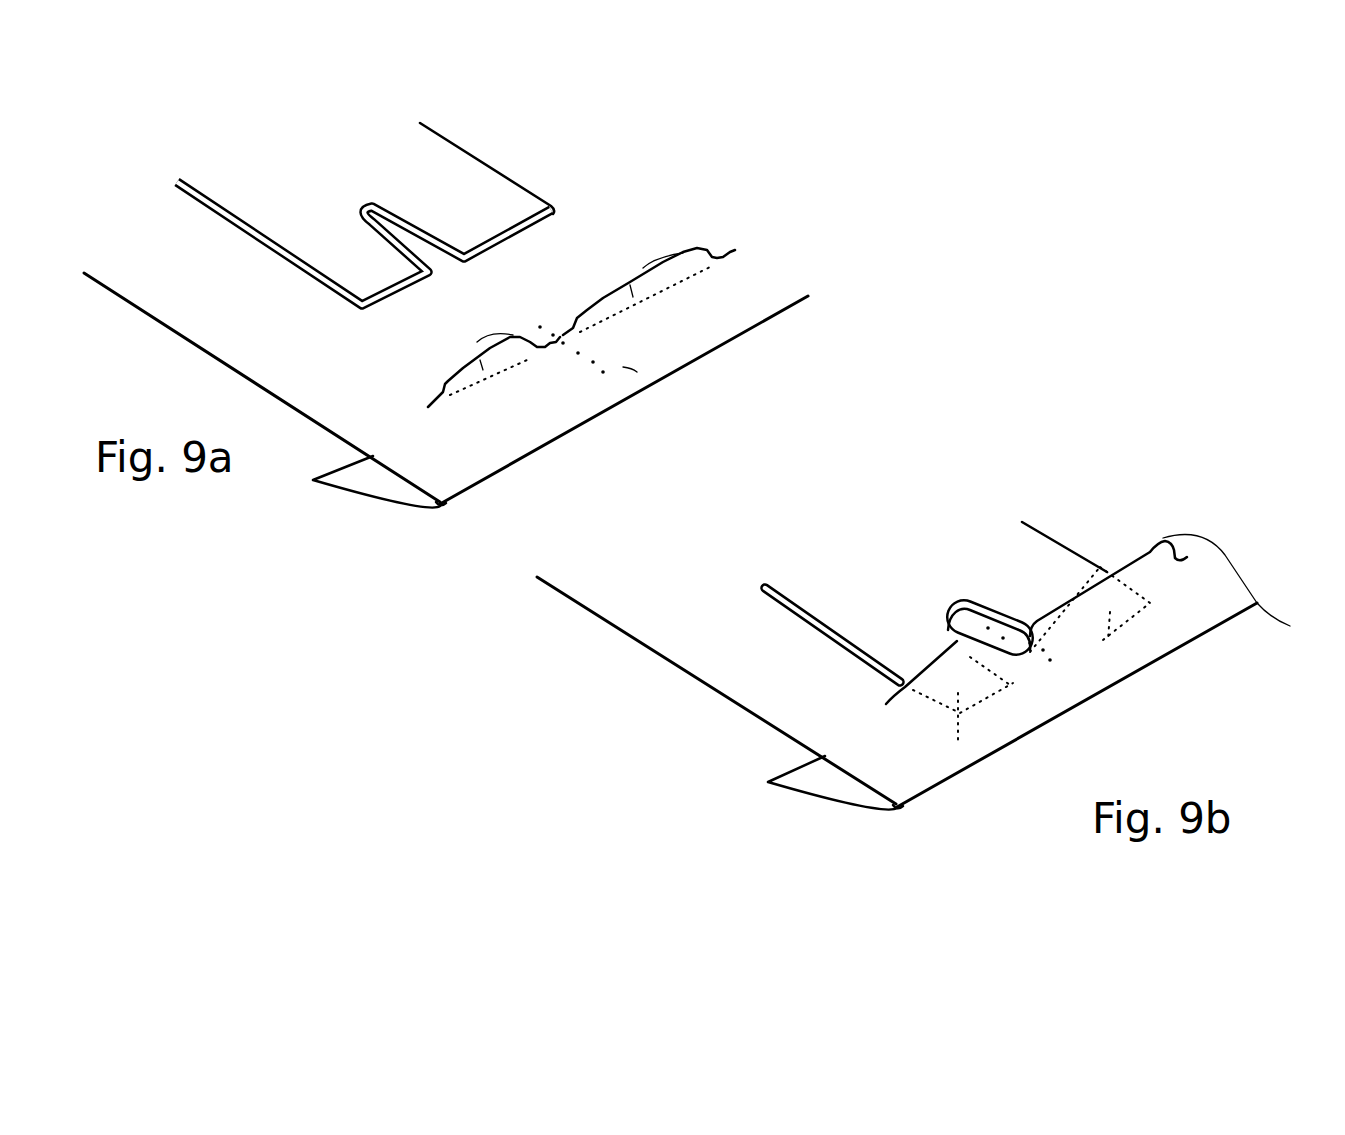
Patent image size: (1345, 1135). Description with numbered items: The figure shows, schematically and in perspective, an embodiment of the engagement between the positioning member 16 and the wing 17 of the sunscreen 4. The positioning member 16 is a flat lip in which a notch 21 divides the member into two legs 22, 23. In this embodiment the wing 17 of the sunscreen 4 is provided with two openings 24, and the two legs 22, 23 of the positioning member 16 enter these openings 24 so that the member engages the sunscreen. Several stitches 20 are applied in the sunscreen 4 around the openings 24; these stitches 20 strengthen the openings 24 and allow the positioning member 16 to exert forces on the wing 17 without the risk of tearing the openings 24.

In FIG. 9A, the sunscreen 4 is at (330, 397).
In FIG. 9A, the positioning member 16 is at (260, 193).
In FIG. 9B, the positioning member 16 is at (807, 583).
In FIG. 9A, the wing 17 is at (383, 483).
In FIG. 9A, the stitch 20 is at (663, 395).
In FIG. 9B, the stitch 20 is at (1073, 692).
In FIG. 9B, the notch 21 is at (1007, 614).
In FIG. 9A, the leg 22 is at (350, 267).
In FIG. 9B, the leg 22 is at (953, 757).
In FIG. 9A, the leg 23 is at (507, 200).
In FIG. 9B, the leg 23 is at (1143, 647).
In FIG. 9A, the opening 24 is at (527, 342).
In FIG. 9B, the opening 24 is at (903, 688).